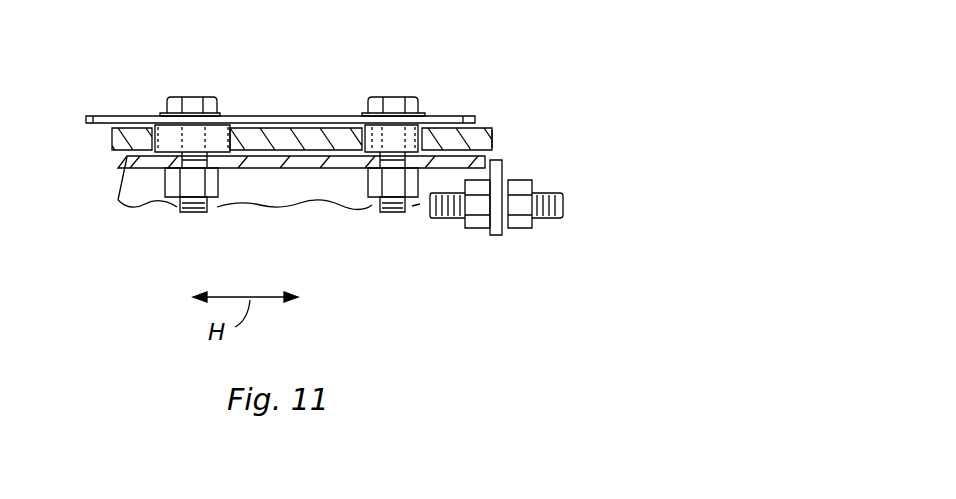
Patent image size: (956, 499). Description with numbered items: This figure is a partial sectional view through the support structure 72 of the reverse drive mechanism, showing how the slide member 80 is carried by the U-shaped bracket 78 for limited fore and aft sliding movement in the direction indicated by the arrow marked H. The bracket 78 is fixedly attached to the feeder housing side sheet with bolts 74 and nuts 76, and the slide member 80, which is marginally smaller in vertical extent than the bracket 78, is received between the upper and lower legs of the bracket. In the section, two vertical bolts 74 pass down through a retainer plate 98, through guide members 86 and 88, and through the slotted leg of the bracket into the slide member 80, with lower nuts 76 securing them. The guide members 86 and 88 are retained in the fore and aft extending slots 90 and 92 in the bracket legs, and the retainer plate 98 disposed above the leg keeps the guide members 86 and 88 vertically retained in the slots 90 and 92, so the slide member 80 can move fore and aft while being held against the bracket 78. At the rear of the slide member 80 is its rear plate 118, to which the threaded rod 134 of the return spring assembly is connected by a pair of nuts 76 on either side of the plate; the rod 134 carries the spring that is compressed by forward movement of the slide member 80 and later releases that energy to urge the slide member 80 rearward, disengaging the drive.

The support structure 72 is at (118, 252).
The bolts 74 is at (192, 97).
The nuts 76 is at (530, 180).
The U-shaped bracket 78 is at (493, 132).
The slide member 80 is at (127, 158).
The guide member 86 is at (241, 127).
The guide member 88 is at (443, 133).
The slot 90 is at (262, 128).
The slot 92 is at (447, 128).
The retainer plate 98 is at (102, 115).
The rear plate 118 is at (495, 235).
The threaded rod 134 is at (557, 220).